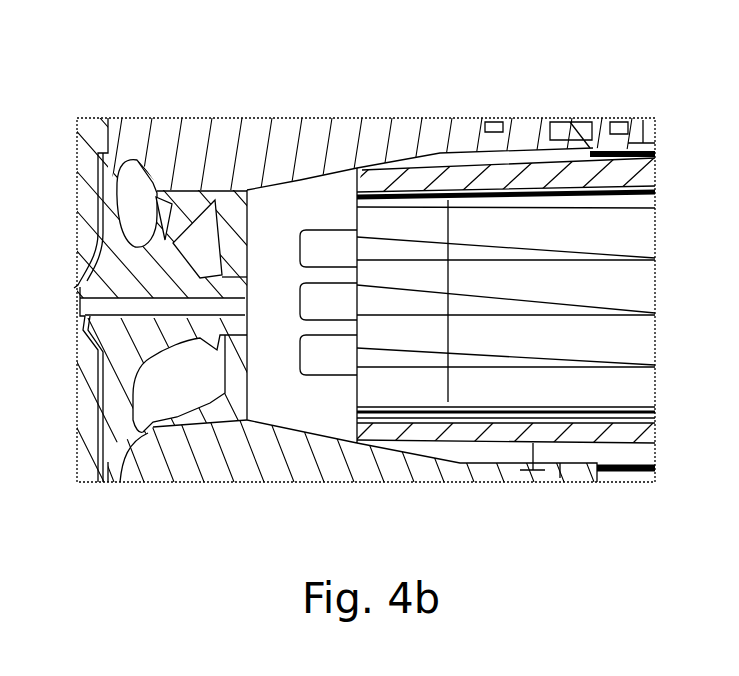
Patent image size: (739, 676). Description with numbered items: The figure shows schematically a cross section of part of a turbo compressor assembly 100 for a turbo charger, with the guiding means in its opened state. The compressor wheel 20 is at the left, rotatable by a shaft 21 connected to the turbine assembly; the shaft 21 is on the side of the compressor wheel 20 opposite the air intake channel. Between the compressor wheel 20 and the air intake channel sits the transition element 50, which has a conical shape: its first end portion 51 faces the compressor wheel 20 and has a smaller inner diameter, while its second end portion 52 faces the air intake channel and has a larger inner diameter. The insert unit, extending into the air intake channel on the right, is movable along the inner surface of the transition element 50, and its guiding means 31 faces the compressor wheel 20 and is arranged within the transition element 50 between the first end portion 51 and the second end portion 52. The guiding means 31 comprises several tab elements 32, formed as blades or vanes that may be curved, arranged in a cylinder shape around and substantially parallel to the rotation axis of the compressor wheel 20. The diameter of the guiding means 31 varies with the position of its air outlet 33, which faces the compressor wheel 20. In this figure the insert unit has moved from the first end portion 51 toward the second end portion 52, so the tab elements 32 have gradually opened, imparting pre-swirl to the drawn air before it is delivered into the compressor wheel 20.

The turbo compressor assembly 100 is at (592, 78).
The compressor wheel 20 is at (153, 432).
The shaft 21 is at (76, 286).
The guiding means 31 is at (540, 438).
The tab elements 32 is at (648, 393).
The air outlet 33 is at (357, 398).
The transition element 50 is at (303, 182).
The first end portion 51 is at (248, 188).
The second end portion 52 is at (357, 168).